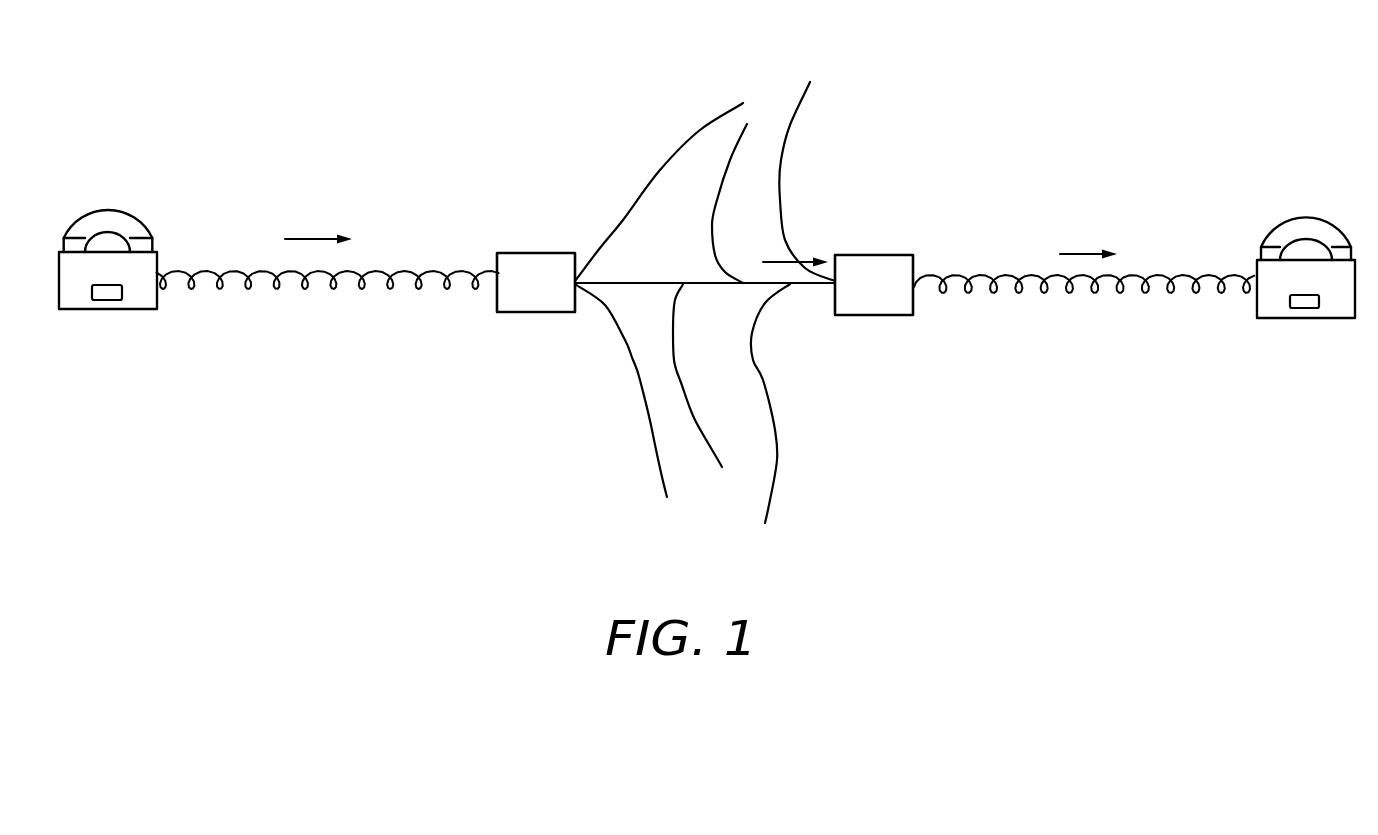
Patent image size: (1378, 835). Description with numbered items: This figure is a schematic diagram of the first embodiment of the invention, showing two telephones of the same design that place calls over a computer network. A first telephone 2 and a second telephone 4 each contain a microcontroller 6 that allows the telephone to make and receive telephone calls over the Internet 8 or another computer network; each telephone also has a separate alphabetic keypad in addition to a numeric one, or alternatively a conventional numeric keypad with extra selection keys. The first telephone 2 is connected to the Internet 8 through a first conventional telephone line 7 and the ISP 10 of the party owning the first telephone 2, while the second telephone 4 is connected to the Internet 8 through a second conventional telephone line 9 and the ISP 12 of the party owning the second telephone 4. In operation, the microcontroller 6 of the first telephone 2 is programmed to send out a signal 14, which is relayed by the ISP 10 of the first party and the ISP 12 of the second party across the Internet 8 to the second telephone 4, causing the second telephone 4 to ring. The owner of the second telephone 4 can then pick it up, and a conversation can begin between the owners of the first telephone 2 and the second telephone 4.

The first telephone 2 is at (93, 310).
The second telephone 4 is at (1290, 318).
The microcontroller 6 is at (122, 300).
The first conventional telephone line 7 is at (333, 287).
The Internet 8 is at (646, 134).
The second conventional telephone line 9 is at (1050, 293).
The ISP 10 is at (548, 313).
The ISP 12 is at (880, 315).
The signal 14 is at (308, 240).